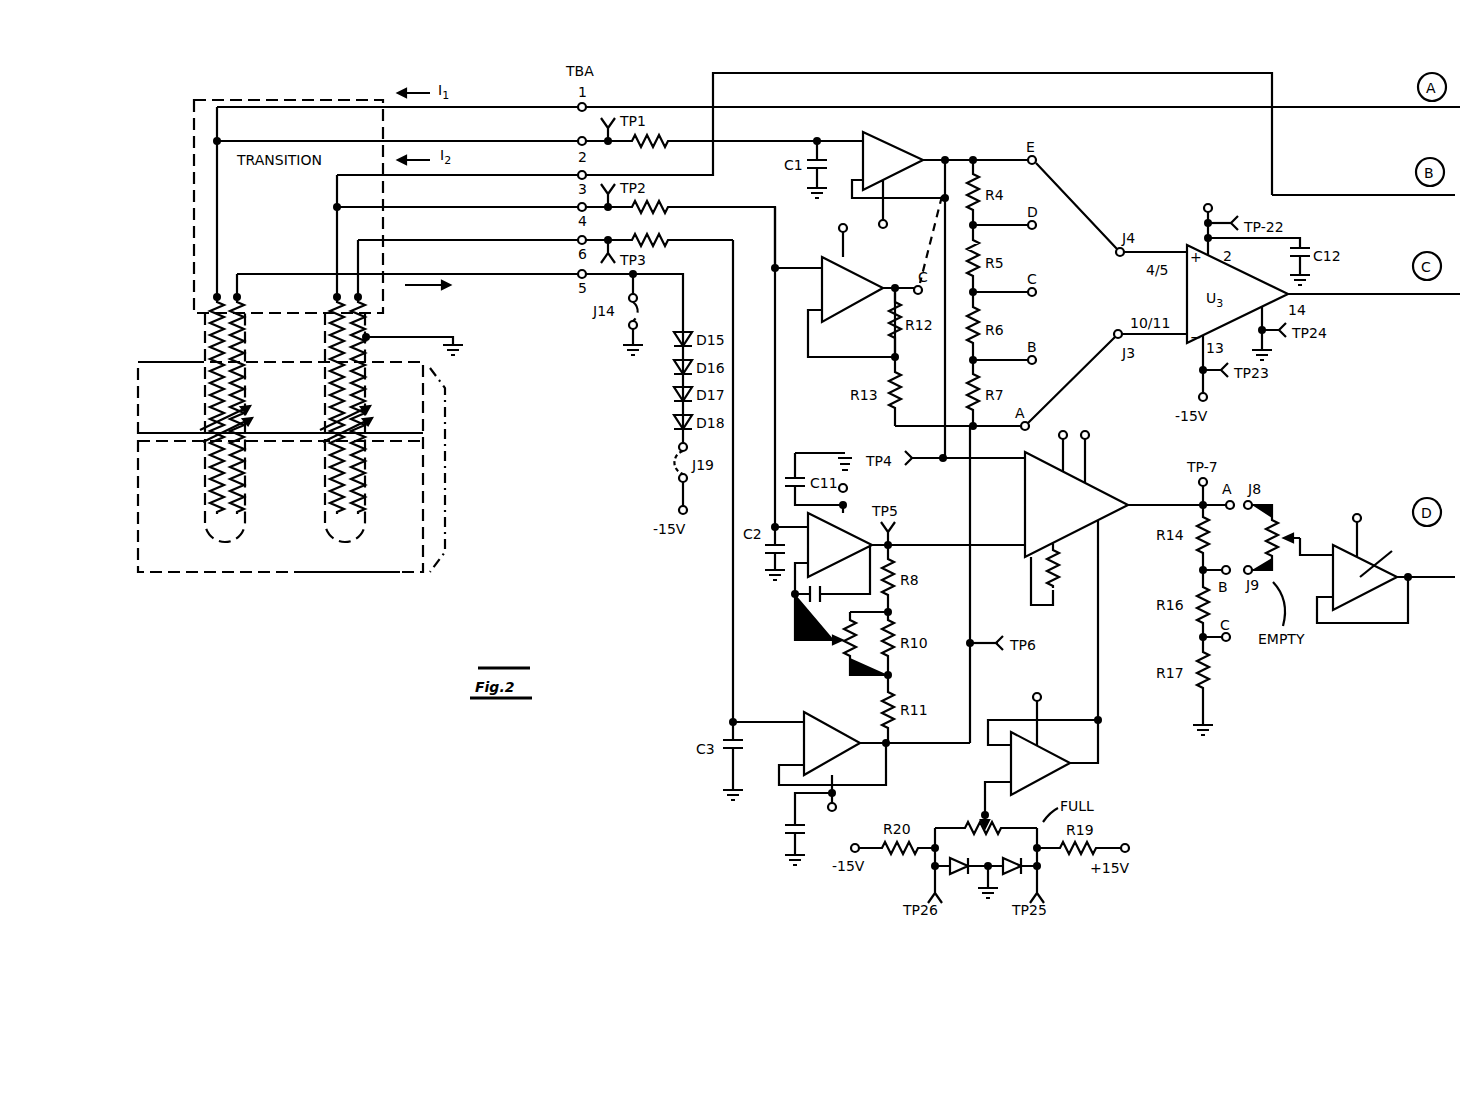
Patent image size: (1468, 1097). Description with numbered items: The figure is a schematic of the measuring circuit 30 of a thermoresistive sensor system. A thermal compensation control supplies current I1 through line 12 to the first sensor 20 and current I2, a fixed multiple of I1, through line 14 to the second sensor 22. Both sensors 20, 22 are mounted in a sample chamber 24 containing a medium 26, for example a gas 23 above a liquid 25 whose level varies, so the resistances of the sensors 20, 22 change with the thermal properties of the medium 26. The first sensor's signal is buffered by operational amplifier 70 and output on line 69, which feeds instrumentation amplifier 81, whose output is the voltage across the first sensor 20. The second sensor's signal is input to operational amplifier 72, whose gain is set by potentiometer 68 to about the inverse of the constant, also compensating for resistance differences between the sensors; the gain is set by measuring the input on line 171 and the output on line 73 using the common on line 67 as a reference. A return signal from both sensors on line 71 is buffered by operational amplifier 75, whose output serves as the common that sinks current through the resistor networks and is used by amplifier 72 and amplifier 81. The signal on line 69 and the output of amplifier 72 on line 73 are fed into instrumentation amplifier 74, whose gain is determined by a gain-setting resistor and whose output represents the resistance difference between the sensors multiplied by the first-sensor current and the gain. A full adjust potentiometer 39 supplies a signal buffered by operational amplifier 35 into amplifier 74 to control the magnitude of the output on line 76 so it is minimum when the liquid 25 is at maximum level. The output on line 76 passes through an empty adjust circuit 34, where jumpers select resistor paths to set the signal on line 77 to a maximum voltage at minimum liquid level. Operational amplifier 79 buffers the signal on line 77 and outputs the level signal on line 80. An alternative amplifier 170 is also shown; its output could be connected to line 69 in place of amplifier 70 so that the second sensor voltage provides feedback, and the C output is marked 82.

The line 12 is at (1310, 107).
The line 14 is at (1312, 195).
The first sensor 20 is at (205, 462).
The second sensor 22 is at (365, 462).
The gas 23 is at (182, 392).
The sample chamber 24 is at (356, 572).
The liquid 25 is at (276, 545).
The medium 26 is at (445, 470).
The measuring circuit 30 is at (755, 64).
The empty adjust circuit 34 is at (1290, 530).
The operational amplifier 35 is at (1062, 778).
The potentiometer 39 is at (979, 822).
The common line 67 is at (1093, 366).
The potentiometer 68 is at (838, 648).
The line 69 is at (944, 352).
The operational amplifier 70 is at (884, 138).
The line 71 is at (731, 563).
The operational amplifier 72 is at (846, 567).
The line 73 is at (983, 542).
The instrumentation amplifier 74 is at (1110, 489).
The operational amplifier 75 is at (828, 738).
The line 76 is at (1160, 503).
The line 77 is at (1308, 557).
The operational amplifier 79 is at (1373, 594).
The line 80 is at (1427, 585).
The instrumentation amplifier 81 is at (1187, 249).
The output line C 82 is at (1377, 292).
The amplifier 170 is at (822, 287).
The line 171 is at (775, 428).